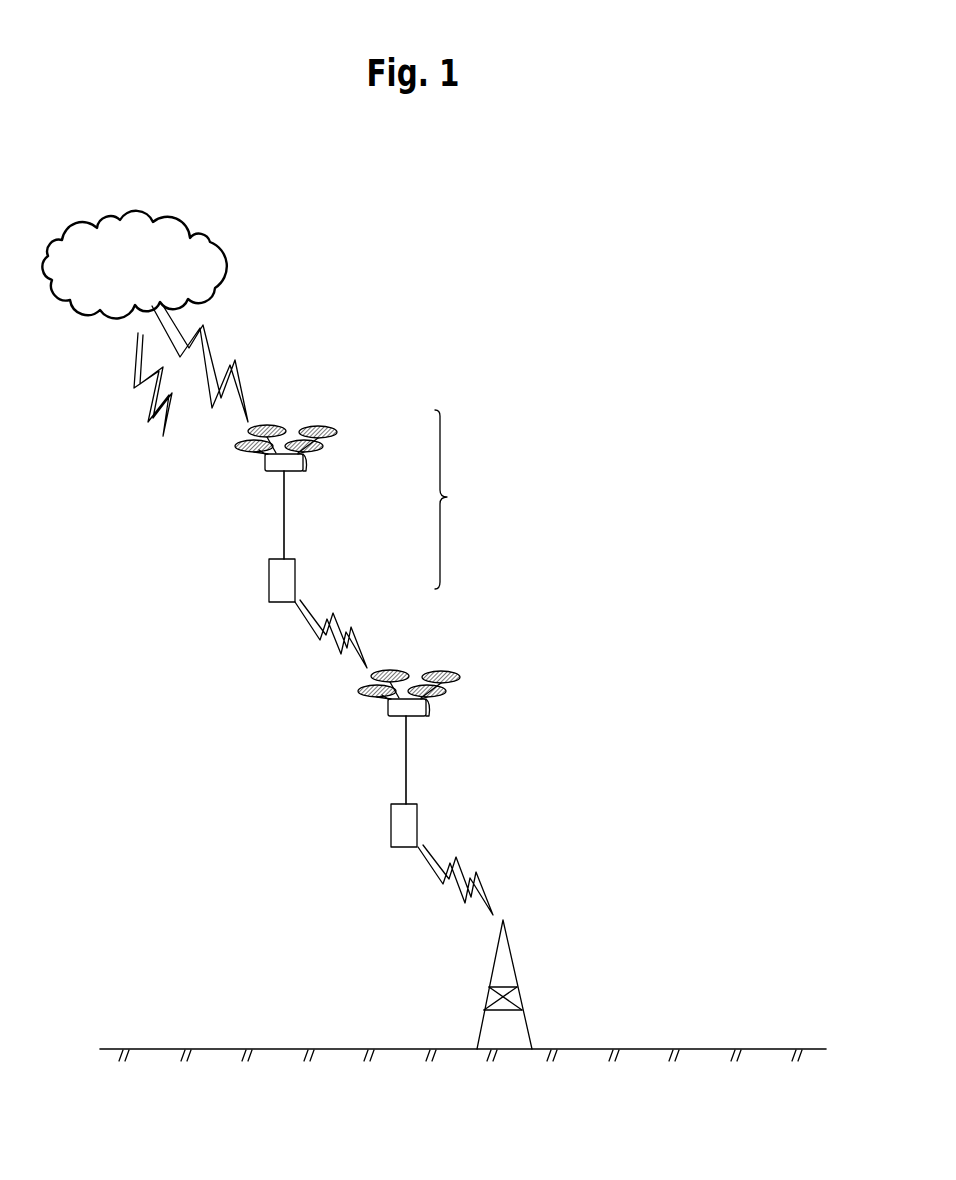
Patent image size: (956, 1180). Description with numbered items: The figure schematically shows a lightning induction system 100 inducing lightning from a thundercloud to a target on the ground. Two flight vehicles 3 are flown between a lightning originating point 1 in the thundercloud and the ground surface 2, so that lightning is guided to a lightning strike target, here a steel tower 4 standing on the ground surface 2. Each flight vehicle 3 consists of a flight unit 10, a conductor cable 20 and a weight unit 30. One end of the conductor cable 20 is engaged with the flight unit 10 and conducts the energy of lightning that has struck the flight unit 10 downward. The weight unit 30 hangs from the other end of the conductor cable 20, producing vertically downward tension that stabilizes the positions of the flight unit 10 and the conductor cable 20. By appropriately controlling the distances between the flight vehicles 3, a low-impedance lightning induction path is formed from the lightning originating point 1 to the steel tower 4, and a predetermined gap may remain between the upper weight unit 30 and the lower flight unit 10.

The lightning originating point 1 is at (160, 303).
The ground surface 2 is at (697, 1049).
The flight vehicle 3 is at (453, 499).
The steel tower 4 is at (515, 975).
The flight unit 10 is at (326, 430).
The conductor cable 20 is at (283, 513).
The weight unit 30 is at (296, 563).
The lightning induction system 100 is at (560, 600).